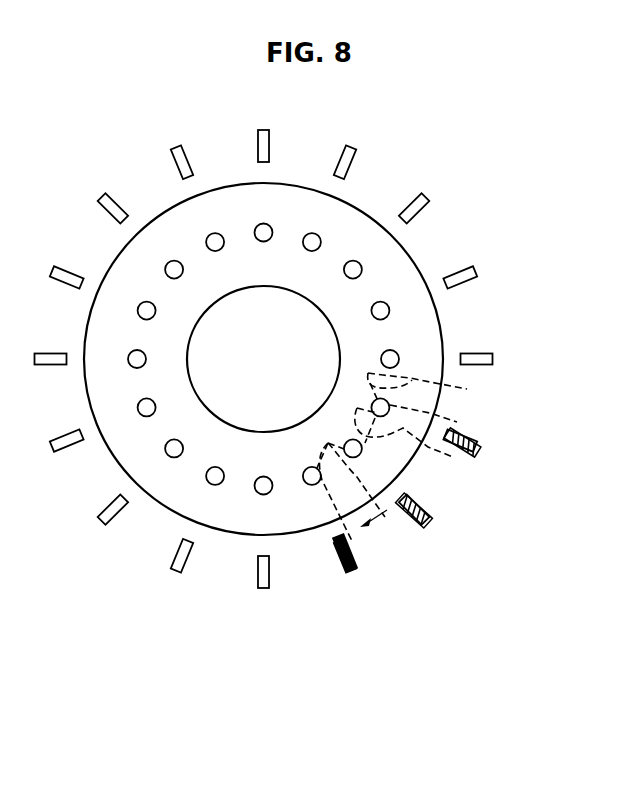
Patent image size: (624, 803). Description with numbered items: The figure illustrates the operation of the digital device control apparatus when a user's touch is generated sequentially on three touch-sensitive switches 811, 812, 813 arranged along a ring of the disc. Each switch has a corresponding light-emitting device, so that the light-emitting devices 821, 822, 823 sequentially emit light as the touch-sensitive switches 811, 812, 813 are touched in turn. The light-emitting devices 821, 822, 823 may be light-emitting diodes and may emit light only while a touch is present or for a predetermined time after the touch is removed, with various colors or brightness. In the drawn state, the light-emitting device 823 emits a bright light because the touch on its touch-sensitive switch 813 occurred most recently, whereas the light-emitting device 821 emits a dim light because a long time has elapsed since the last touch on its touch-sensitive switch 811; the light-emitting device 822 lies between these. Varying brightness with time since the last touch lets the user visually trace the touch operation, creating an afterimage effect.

The touch-sensitive switch 811 is at (389, 405).
The touch-sensitive switch 812 is at (362, 449).
The touch-sensitive switch 813 is at (309, 484).
The light-emitting device 821 is at (478, 452).
The light-emitting device 822 is at (430, 525).
The light-emitting device 823 is at (353, 572).